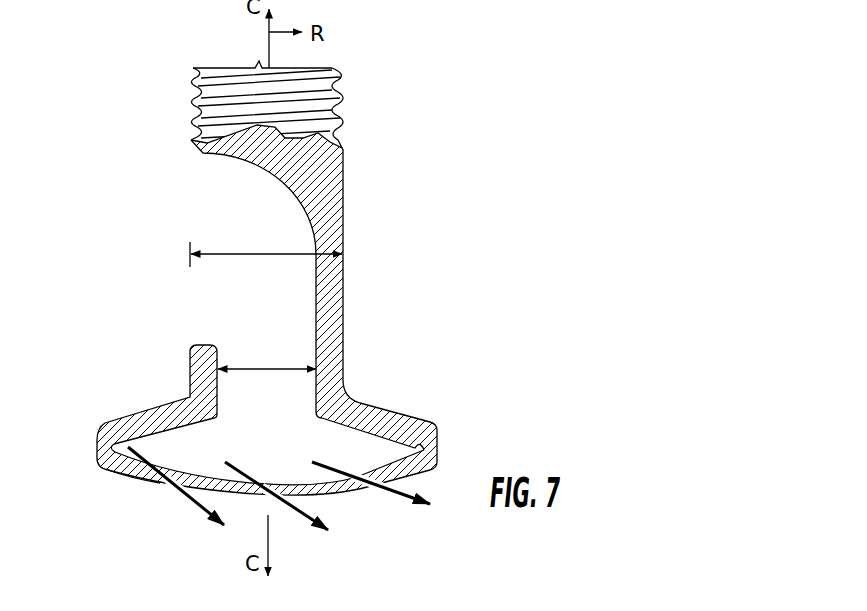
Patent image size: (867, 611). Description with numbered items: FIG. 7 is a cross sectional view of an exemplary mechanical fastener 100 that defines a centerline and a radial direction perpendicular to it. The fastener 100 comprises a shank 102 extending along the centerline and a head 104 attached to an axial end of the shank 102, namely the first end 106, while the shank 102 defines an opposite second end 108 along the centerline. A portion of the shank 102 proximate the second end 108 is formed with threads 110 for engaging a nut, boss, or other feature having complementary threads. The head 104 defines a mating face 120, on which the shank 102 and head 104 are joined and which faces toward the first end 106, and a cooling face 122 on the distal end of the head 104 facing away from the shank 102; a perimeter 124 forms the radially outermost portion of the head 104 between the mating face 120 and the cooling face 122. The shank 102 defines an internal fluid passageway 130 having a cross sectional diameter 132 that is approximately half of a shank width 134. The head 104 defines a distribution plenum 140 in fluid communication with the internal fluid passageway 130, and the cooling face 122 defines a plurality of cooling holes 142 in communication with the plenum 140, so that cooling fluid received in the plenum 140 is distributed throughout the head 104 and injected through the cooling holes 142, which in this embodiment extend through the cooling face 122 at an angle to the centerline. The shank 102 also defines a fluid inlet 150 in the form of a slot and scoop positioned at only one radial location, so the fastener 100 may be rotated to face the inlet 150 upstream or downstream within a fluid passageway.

The fastener 100 is at (487, 87).
The shank 102 is at (348, 192).
The head 104 is at (414, 426).
The first end 106 is at (350, 377).
The second end 108 is at (184, 75).
The threads 110 is at (200, 100).
The mating face 120 is at (126, 408).
The cooling face 122 is at (126, 484).
The perimeter 124 is at (94, 448).
The internal fluid passageway 130 is at (285, 308).
The cross sectional diameter 132 is at (263, 368).
The shank width 134 is at (252, 253).
The distribution plenum 140 is at (283, 438).
The cooling holes 142 is at (358, 493).
The fluid inlet 150 is at (203, 187).